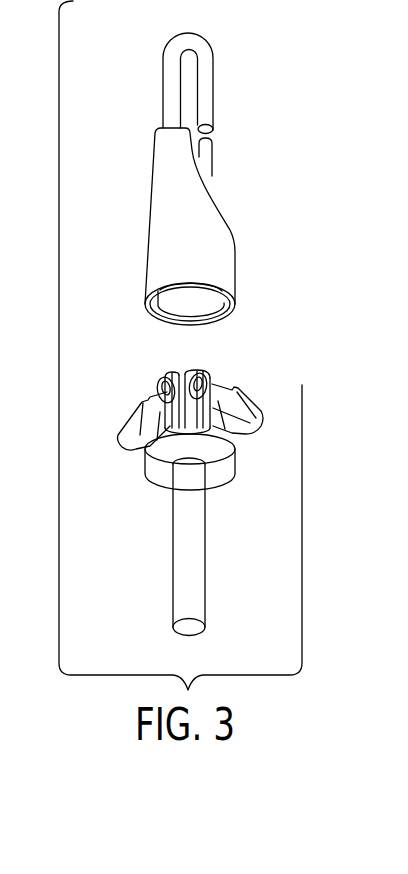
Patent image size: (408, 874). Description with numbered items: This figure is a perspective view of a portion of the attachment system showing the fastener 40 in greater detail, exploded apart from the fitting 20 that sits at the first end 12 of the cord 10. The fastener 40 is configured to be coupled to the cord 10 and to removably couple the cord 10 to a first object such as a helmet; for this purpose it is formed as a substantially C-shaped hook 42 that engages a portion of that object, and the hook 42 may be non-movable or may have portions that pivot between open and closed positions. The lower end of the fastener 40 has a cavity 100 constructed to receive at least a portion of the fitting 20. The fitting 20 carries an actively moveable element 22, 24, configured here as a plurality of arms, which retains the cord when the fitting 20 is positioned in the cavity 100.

The cord 10 is at (205, 550).
The first end 12 is at (182, 370).
The fitting 20 is at (172, 367).
The actively moveable element 22 is at (140, 424).
The actively moveable element 24 is at (245, 408).
The fastener 40 is at (168, 177).
The hook 42 is at (213, 86).
The cavity 100 is at (213, 302).